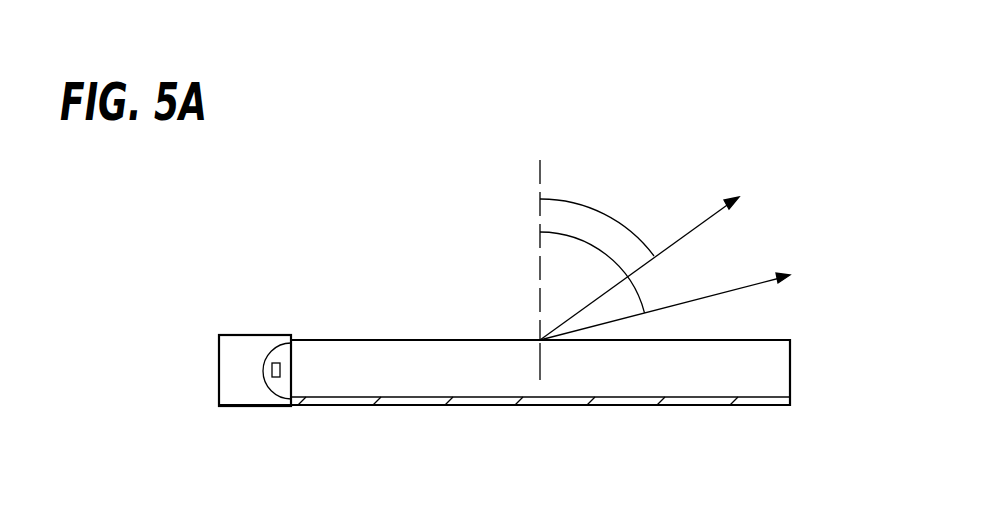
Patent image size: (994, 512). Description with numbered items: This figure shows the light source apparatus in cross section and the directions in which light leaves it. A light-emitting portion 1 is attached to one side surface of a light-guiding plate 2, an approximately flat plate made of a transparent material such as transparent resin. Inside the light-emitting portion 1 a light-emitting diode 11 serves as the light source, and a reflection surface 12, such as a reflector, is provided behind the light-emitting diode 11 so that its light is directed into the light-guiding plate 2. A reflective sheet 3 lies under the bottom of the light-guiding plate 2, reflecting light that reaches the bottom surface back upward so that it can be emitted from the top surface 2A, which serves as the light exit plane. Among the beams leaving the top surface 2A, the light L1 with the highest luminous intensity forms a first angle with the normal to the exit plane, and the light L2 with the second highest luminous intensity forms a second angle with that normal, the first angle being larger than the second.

The light-emitting portion 1 is at (254, 392).
The light-guiding plate 2 is at (610, 368).
The top surface 2A is at (382, 340).
The reflective sheet 3 is at (532, 407).
The light-emitting diode 11 is at (276, 363).
The reflection surface 12 is at (265, 362).
The light with highest luminous intensity L1 is at (747, 287).
The light with second highest luminous intensity L2 is at (703, 224).